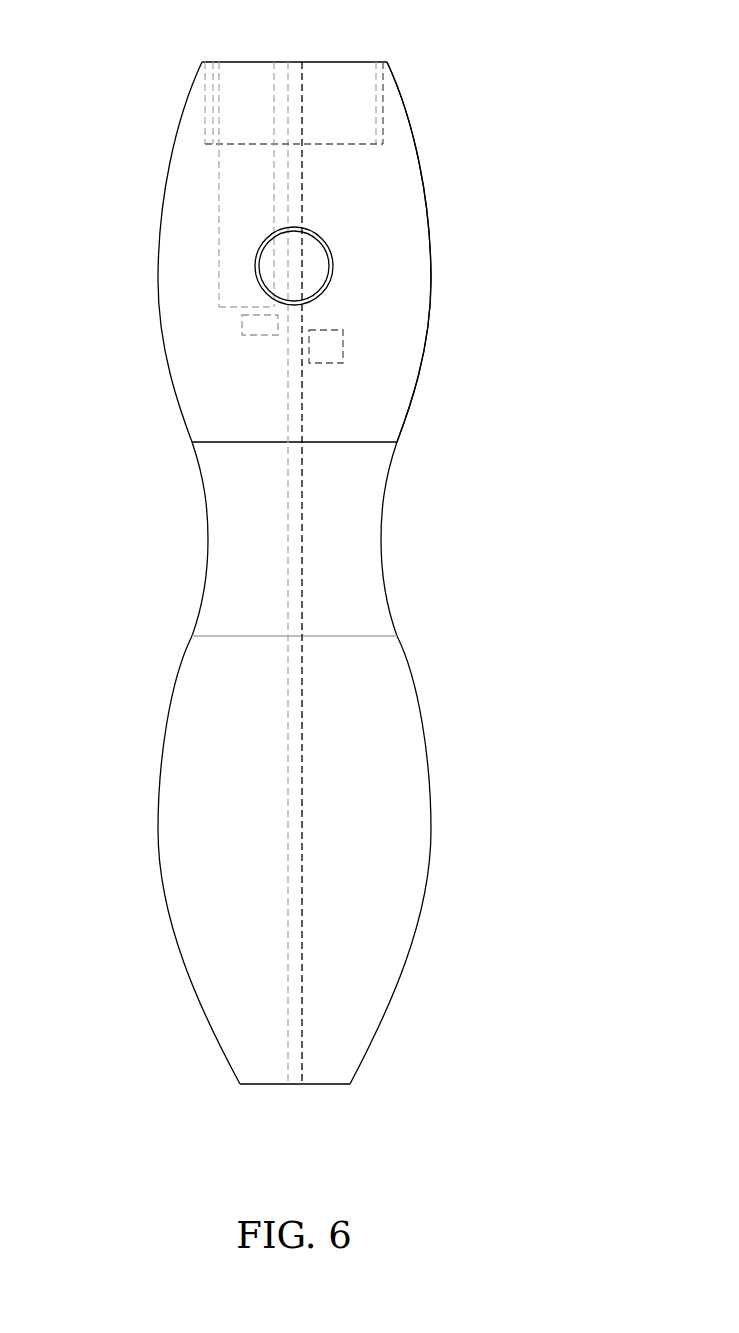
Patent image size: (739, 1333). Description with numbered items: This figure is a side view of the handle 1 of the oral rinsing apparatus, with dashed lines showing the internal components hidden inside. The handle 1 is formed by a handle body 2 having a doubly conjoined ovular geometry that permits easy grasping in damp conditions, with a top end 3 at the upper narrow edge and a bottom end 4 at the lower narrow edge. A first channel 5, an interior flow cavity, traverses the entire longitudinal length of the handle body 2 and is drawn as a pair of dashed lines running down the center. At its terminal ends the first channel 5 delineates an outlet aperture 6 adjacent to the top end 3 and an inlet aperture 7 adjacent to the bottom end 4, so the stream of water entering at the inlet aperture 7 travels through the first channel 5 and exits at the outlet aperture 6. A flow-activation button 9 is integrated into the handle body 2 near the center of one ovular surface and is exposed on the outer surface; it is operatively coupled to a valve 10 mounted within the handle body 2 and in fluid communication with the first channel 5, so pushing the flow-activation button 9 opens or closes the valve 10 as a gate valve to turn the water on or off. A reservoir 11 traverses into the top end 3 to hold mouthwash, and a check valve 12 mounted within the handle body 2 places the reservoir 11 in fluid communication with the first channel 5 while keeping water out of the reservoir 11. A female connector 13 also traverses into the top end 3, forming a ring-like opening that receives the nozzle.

The handle 1 is at (117, 487).
The handle body 2 is at (423, 250).
The top end 3 is at (163, 78).
The bottom end 4 is at (387, 1078).
The first channel 5 is at (300, 705).
The outlet aperture 6 is at (294, 60).
The inlet aperture 7 is at (294, 1086).
The flow-activation button 9 is at (320, 270).
The valve 10 is at (327, 362).
The reservoir 11 is at (233, 198).
The check valve 12 is at (250, 332).
The female connector 13 is at (360, 76).